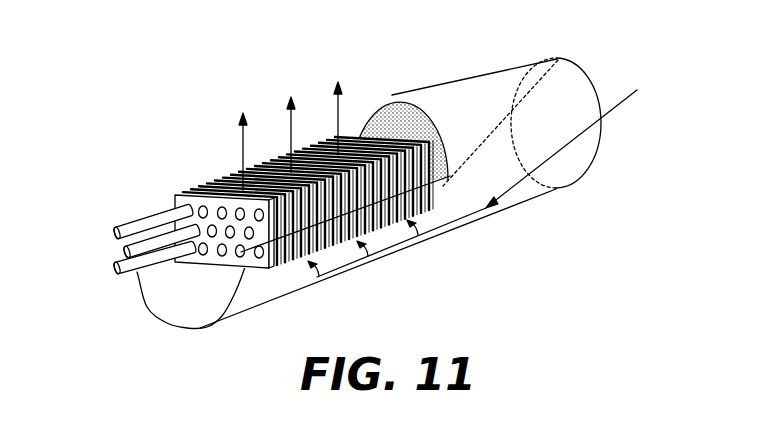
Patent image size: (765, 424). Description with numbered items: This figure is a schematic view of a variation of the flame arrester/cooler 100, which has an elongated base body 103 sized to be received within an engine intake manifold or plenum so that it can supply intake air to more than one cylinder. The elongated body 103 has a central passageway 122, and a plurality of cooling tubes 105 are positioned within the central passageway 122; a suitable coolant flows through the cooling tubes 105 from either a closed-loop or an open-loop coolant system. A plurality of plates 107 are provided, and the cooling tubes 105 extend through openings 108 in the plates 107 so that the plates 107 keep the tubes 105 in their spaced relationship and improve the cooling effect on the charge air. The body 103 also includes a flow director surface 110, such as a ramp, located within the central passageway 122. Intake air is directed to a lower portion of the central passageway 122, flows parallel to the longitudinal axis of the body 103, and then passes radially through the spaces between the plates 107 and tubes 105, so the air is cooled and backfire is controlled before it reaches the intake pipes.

The flame arrester/cooler 100 is at (564, 28).
The elongated base body 103 is at (507, 209).
The cooling tubes 105 is at (122, 253).
The plates 107 is at (179, 192).
The openings 108 is at (242, 253).
The flow director surface 110 is at (537, 92).
The central passageway 122 is at (176, 322).